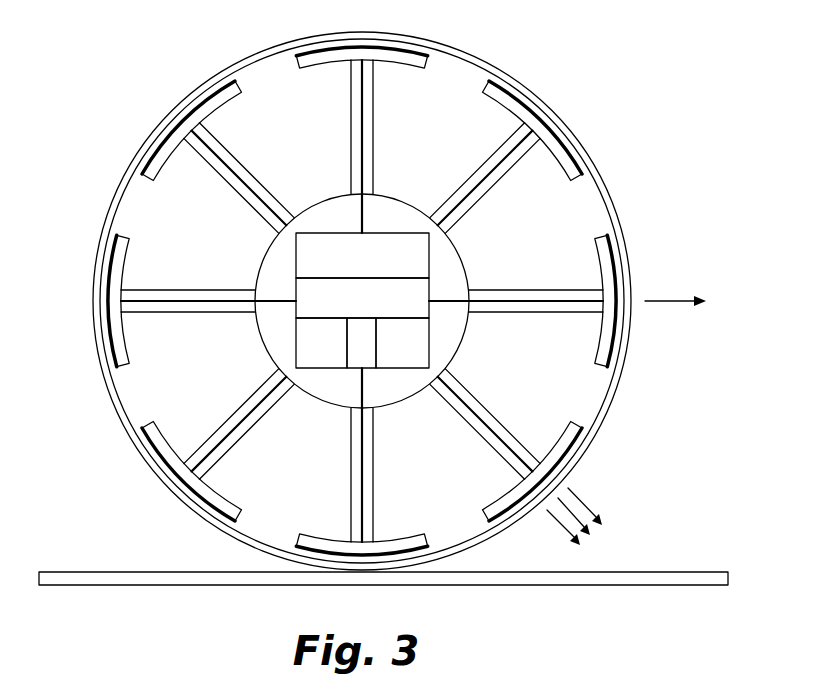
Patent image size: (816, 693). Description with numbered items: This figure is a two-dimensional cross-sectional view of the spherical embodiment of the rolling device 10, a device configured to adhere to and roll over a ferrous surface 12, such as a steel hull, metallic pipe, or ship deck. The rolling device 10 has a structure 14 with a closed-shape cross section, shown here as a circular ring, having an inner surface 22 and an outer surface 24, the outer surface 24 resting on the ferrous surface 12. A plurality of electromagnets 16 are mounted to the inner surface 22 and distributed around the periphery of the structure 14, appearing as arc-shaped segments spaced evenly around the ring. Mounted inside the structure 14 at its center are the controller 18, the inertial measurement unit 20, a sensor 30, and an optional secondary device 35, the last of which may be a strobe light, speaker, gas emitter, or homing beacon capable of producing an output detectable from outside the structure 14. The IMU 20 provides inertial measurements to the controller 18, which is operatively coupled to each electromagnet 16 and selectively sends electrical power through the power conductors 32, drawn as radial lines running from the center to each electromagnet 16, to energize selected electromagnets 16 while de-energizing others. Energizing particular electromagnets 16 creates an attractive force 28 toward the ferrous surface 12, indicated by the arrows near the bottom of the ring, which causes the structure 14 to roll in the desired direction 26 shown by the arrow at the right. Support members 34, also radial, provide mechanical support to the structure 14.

The rolling device 10 is at (116, 82).
The ferrous surface 12 is at (85, 572).
The structure 14 is at (387, 293).
The electromagnets 16 is at (576, 178).
The controller 18 is at (362, 255).
The inertial measurement unit 20 is at (362, 298).
The inner surface 22 is at (463, 75).
The outer surface 24 is at (496, 60).
The desired direction 26 is at (680, 300).
The attractive force 28 is at (583, 497).
The sensor 30 is at (321, 343).
The power conductors 32 is at (470, 412).
The support members 34 is at (222, 188).
The secondary device 35 is at (402, 343).